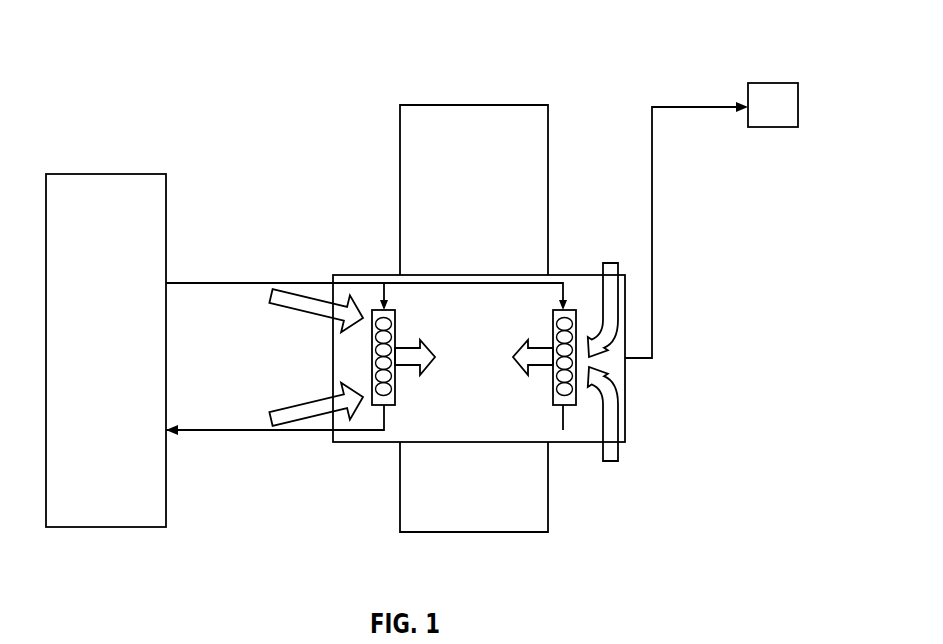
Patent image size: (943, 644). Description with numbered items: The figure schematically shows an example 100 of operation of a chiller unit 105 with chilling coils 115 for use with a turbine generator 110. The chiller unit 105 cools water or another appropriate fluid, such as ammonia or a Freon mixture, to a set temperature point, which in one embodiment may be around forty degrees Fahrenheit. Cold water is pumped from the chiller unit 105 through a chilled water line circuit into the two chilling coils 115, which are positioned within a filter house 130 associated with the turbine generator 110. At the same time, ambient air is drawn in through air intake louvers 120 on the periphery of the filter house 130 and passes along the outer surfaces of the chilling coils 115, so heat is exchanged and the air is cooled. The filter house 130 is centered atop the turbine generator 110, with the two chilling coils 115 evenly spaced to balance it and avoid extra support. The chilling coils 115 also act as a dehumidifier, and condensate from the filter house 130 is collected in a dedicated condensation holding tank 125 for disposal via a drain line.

The example of operation 100 is at (200, 88).
The chiller unit 105 is at (128, 362).
The turbine generator 110 is at (500, 532).
The chilling coils 115 is at (382, 308).
The air intake louvers 120 is at (295, 292).
The condensation holding tank 125 is at (778, 83).
The filter house 130 is at (392, 443).